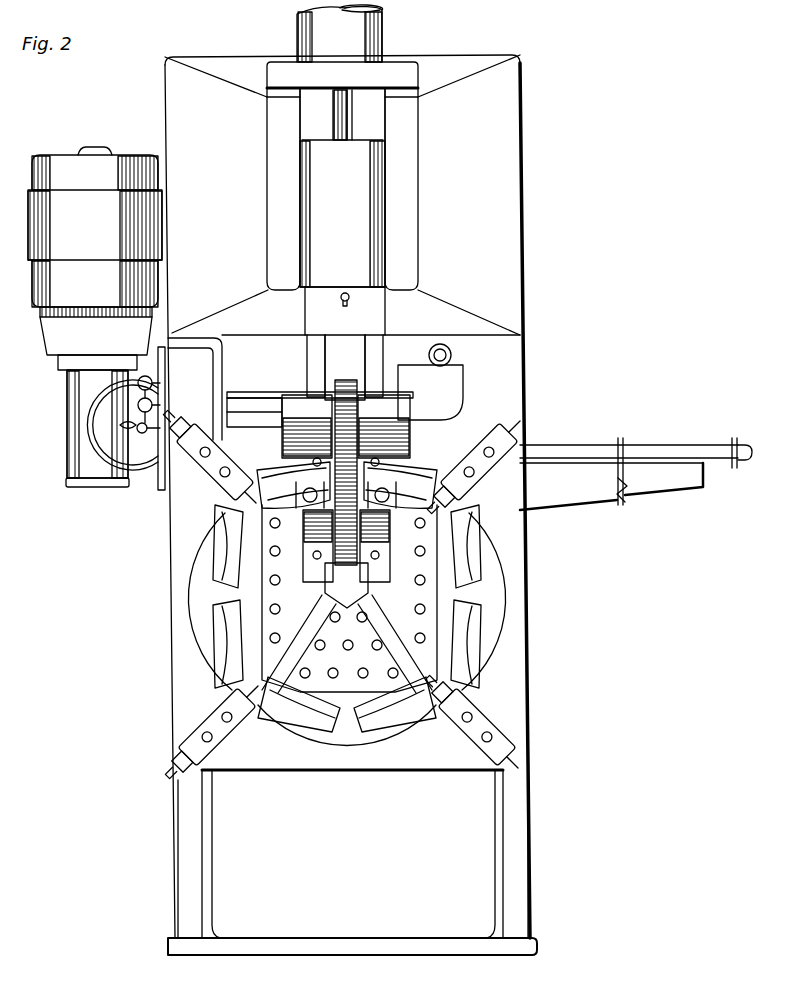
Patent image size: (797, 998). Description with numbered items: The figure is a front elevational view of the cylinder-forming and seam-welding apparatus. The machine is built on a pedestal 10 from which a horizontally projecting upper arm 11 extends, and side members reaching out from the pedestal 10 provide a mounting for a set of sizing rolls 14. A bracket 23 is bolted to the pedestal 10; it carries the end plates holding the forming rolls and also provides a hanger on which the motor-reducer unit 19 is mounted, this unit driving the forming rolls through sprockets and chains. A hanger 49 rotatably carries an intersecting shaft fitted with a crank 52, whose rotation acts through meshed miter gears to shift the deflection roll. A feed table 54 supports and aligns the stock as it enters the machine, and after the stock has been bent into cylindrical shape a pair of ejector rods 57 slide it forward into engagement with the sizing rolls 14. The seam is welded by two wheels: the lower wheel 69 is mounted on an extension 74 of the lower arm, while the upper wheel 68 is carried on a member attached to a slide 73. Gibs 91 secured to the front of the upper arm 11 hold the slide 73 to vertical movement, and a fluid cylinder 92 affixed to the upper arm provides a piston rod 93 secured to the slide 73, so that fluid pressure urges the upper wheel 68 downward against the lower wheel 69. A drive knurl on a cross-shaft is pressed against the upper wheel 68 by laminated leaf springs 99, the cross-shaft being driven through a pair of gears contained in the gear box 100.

The pedestal 10 is at (173, 840).
The upper arm 11 is at (487, 200).
The sizing rolls 14 is at (397, 727).
The motor-reducer unit 19 is at (70, 287).
The bracket 23 is at (190, 356).
The hanger 49 is at (244, 408).
The crank 52 is at (136, 432).
The feed table 54 is at (580, 445).
The ejector rods 57 is at (380, 498).
The upper wheel 68 is at (345, 430).
The lower wheel 69 is at (357, 520).
The slide 73 is at (318, 178).
The extension 74 is at (340, 577).
The gibs 91 is at (276, 135).
The fluid cylinder 92 is at (380, 42).
The piston rod 93 is at (340, 132).
The laminated leaf springs 99 is at (372, 358).
The gear box 100 is at (453, 384).